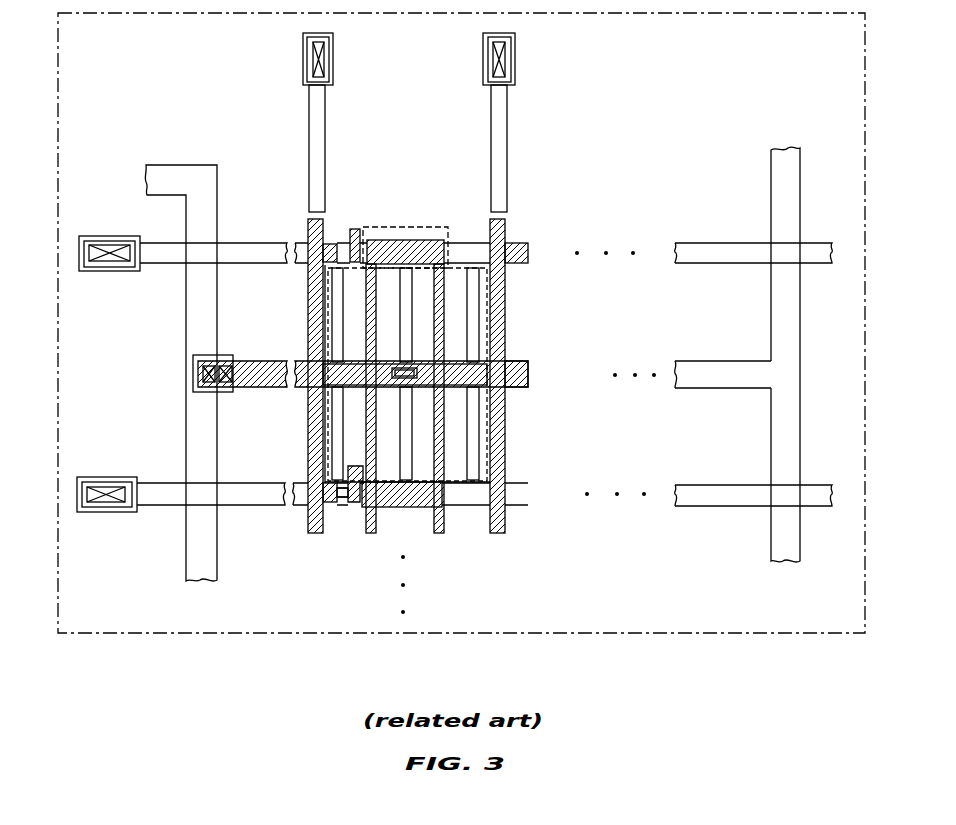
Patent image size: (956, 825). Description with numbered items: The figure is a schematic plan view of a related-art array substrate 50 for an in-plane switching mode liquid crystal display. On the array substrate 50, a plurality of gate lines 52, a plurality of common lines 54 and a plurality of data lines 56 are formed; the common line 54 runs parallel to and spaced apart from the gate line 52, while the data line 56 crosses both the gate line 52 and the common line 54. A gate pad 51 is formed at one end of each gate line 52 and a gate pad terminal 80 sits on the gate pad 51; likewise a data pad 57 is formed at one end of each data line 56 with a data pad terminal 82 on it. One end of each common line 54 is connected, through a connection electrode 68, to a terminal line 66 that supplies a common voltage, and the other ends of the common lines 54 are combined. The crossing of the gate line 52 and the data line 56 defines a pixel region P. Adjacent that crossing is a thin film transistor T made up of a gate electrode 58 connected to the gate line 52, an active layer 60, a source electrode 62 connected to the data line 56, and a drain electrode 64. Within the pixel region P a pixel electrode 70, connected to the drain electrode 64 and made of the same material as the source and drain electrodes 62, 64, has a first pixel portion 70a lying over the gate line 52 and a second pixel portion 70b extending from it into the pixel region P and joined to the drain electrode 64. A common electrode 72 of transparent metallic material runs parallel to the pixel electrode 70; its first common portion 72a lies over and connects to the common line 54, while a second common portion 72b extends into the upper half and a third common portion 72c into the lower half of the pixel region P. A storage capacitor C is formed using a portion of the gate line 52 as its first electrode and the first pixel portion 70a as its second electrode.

The array substrate 50 is at (745, 634).
The gate pad 51 is at (125, 240).
The gate line 52 is at (252, 243).
The common line 54 is at (250, 390).
The data line 56 is at (309, 137).
The data pad 57 is at (329, 66).
The gate electrode 58 is at (333, 481).
The active layer 60 is at (337, 508).
The source electrode 62 is at (316, 528).
The drain electrode 64 is at (353, 507).
The terminal line 66 is at (186, 340).
The connection electrode 68 is at (233, 355).
The pixel electrode 70 is at (467, 381).
The first pixel portion 70a is at (447, 253).
The second pixel portion 70b is at (444, 308).
The common electrode 72 is at (471, 374).
The first common portion 72a is at (528, 370).
The second common portion 72b is at (480, 346).
The third common portion 72c is at (478, 418).
The gate pad terminal 80 is at (95, 236).
The data pad terminal 82 is at (333, 45).
The storage capacitor C is at (406, 226).
The thin film transistor T is at (340, 506).
The pixel region P is at (471, 483).